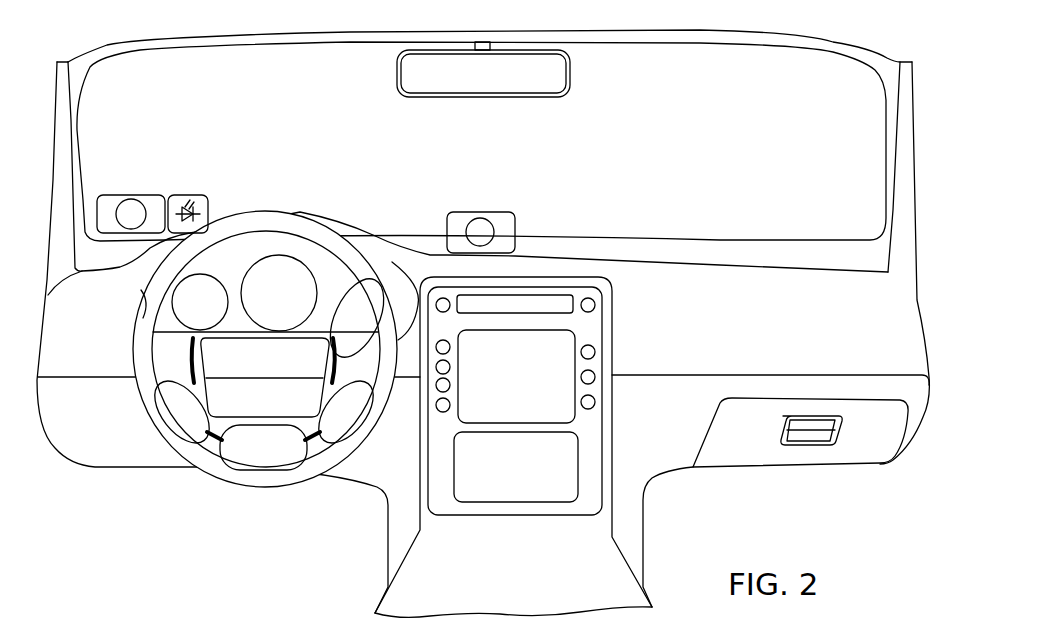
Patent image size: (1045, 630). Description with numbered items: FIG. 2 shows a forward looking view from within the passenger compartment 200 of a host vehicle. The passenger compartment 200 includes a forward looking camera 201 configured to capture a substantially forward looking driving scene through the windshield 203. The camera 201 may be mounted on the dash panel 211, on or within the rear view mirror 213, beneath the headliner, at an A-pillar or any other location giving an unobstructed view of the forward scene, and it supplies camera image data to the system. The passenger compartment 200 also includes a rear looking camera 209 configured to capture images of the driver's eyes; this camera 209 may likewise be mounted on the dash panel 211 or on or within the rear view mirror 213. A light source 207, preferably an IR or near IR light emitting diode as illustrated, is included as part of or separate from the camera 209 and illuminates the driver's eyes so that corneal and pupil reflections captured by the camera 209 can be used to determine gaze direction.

The passenger compartment 200 is at (483, 308).
The forward looking camera 201 is at (511, 211).
The windshield 203 is at (497, 170).
The light source 207 is at (184, 195).
The rear looking camera 209 is at (117, 195).
The dash panel 211 is at (548, 245).
The rear view mirror 213 is at (402, 93).